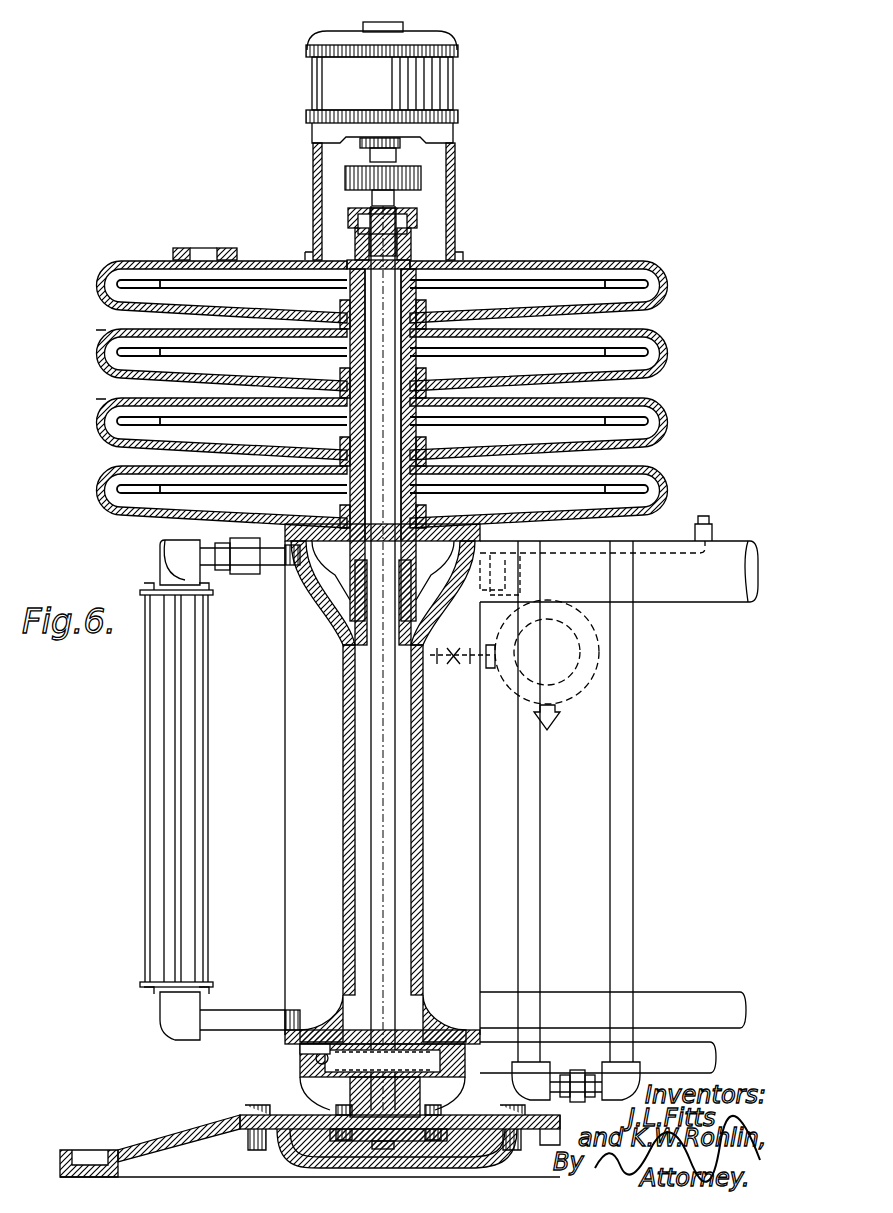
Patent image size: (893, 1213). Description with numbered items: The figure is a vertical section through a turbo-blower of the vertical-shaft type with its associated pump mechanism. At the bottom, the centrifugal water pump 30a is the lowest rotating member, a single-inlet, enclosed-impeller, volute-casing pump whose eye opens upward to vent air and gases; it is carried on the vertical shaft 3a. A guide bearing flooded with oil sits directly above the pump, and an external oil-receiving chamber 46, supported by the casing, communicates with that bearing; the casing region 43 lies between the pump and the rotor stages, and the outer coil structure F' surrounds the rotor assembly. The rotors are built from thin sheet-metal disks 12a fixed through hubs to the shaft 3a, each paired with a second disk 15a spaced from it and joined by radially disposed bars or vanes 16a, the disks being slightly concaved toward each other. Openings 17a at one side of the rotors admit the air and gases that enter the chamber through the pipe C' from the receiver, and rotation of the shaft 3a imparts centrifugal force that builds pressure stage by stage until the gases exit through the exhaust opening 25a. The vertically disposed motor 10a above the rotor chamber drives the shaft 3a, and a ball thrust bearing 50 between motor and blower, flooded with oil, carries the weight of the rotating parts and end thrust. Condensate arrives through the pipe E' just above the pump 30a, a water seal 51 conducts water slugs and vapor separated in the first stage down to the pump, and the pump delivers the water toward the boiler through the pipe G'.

The motor 10a is at (382, 85).
The ball thrust bearing 50 is at (412, 241).
The exhaust opening 25a is at (216, 232).
The disks 15a is at (557, 279).
The radially disposed bars or vanes 16a is at (648, 282).
The openings 17a is at (438, 409).
The disks 12a is at (347, 490).
The cooling coil F' is at (82, 364).
The pump bowl 43 is at (352, 620).
The shaft 3a is at (410, 855).
The external oil-receiving chamber 46 is at (598, 655).
The water seal 51 is at (541, 852).
The centrifugal water pump 30a is at (310, 1044).
The pipe C' is at (619, 559).
The pipe E' is at (613, 1010).
The pipe G' is at (598, 1058).